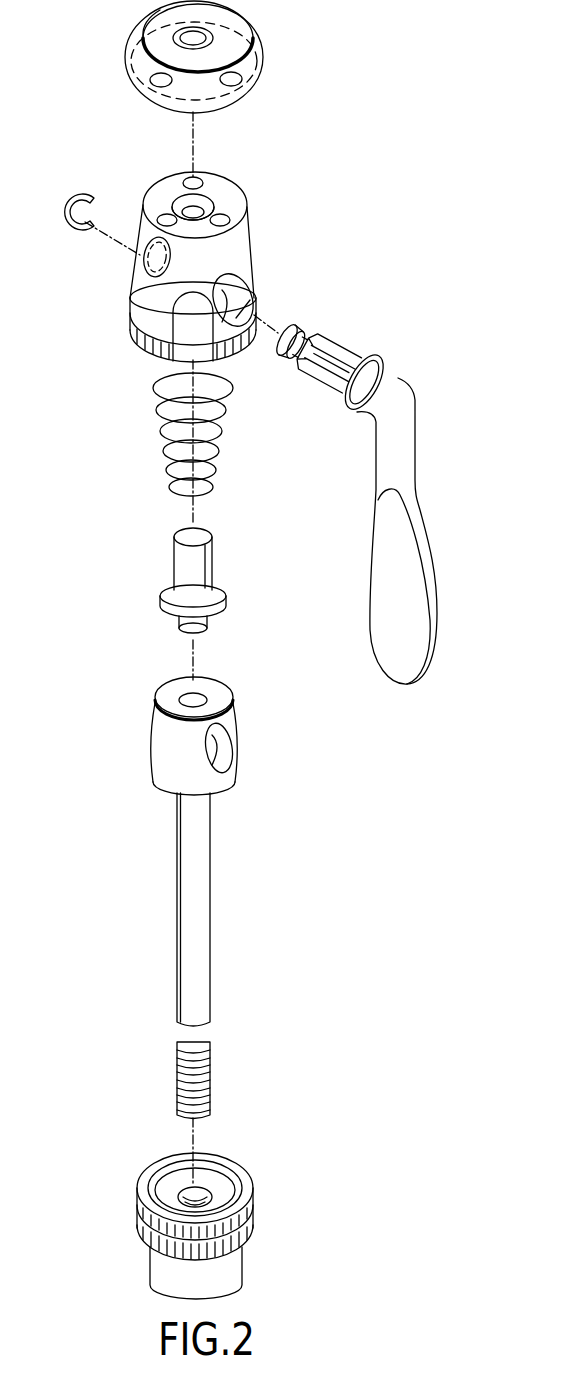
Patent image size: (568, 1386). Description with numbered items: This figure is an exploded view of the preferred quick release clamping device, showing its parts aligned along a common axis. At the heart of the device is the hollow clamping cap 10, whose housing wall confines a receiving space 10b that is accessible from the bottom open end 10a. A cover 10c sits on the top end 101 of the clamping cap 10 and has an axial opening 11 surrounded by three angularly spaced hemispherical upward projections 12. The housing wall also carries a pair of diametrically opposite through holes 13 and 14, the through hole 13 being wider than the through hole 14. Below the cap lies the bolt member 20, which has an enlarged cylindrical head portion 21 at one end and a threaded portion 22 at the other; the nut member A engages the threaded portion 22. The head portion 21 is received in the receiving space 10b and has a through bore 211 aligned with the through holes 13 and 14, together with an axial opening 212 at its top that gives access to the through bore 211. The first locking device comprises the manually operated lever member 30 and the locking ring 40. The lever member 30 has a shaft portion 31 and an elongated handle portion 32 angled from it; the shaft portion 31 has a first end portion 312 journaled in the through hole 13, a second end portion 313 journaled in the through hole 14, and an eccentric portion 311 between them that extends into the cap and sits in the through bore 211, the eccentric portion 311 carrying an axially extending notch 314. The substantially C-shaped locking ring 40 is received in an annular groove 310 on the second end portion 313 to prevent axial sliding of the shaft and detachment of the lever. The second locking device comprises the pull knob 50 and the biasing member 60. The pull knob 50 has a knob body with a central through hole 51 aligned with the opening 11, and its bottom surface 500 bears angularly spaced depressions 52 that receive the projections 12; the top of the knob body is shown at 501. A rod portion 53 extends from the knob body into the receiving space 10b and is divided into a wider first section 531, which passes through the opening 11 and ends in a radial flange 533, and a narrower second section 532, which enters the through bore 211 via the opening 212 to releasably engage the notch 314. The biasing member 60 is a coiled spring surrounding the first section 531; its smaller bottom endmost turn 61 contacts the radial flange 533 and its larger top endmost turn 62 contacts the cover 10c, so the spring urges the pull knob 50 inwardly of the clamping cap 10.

The clamping cap 10 is at (197, 260).
The bottom open end 10a is at (180, 357).
The receiving space 10b is at (183, 312).
The cover 10c is at (208, 190).
The top end 101 is at (214, 212).
The axial opening 11 is at (210, 212).
The hemispherical upward projections 12 is at (163, 212).
The through hole 13 is at (245, 295).
The through hole 14 is at (140, 262).
The locking ring 40 is at (82, 188).
The pull knob 50 is at (192, 70).
The bottom surface 500 is at (230, 100).
The cap top surface 501 is at (145, 25).
The central through hole 51 is at (205, 40).
The depressions 52 is at (240, 80).
The manually operated lever member 30 is at (490, 248).
The shaft portion 31 is at (366, 367).
The annular groove 310 is at (291, 342).
The eccentric portion 311 is at (327, 362).
The first end portion 312 is at (364, 382).
The second end portion 313 is at (300, 347).
The axially extending notch 314 is at (331, 362).
The elongated handle portion 32 is at (420, 502).
The biasing member 60 is at (182, 436).
The bottom endmost turn 61 is at (172, 487).
The top endmost turn 62 is at (225, 390).
The rod portion 53 is at (205, 595).
The first section 531 is at (212, 562).
The second section 532 is at (206, 632).
The radial flange 533 is at (225, 604).
The head portion 21 is at (205, 731).
The through bore 211 is at (222, 752).
The axial opening 212 is at (185, 695).
The bolt member 20 is at (213, 882).
The threaded portion 22 is at (212, 1068).
The nut member A is at (253, 1225).